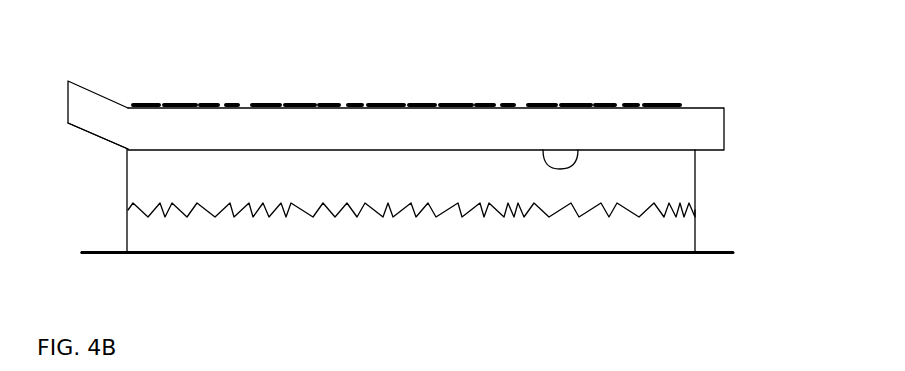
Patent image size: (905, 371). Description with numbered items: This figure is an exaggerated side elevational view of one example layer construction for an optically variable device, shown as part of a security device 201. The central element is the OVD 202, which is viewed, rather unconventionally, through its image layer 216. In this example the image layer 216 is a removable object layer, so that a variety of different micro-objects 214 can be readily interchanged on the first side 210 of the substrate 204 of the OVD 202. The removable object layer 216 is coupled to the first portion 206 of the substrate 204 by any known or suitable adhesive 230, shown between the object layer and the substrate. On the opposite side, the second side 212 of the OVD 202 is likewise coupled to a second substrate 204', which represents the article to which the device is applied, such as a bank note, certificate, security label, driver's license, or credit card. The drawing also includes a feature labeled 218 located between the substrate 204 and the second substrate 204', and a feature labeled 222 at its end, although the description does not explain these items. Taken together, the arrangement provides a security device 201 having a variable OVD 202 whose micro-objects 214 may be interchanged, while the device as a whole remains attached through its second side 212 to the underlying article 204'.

The security device 201 is at (438, 296).
The OVD 202 is at (672, 77).
The substrate 204 is at (371, 200).
The second substrate 204' is at (86, 274).
The first portion of substrate 206 is at (710, 100).
The first side of substrate 210 is at (123, 85).
The second side of the OVD 212 is at (622, 265).
The micro-objects 214 is at (187, 105).
The image layer 216 is at (113, 125).
The spring element 218 is at (310, 185).
The spring end 222 is at (143, 221).
The adhesive 230 is at (577, 150).